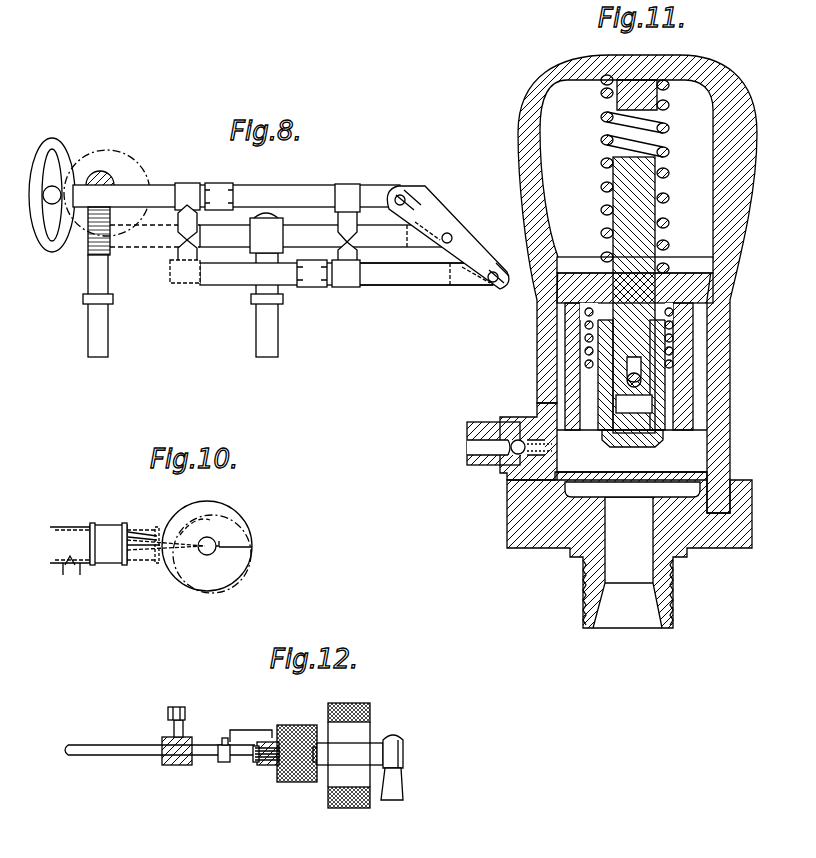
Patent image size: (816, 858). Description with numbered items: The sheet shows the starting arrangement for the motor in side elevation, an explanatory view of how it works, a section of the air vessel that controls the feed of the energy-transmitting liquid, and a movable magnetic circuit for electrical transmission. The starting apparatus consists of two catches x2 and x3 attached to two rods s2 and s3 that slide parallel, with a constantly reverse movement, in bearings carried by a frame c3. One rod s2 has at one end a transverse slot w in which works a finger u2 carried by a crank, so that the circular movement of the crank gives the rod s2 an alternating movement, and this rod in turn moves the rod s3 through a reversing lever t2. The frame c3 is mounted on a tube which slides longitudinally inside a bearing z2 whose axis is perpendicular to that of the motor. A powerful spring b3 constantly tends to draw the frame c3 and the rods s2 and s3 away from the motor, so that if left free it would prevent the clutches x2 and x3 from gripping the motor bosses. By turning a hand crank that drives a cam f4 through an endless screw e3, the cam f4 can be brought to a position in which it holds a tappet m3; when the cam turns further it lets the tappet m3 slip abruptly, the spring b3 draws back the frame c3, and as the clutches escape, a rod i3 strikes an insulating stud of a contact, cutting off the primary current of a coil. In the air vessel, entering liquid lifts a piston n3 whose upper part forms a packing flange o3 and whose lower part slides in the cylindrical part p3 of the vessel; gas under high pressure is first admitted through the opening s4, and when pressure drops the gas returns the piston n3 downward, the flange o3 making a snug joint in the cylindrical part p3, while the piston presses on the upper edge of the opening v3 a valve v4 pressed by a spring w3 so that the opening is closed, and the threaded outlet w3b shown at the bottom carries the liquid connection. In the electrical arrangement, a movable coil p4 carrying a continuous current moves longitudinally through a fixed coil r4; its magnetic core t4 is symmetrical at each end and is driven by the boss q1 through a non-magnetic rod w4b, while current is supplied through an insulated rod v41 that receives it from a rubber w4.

In FIG. 8, the transverse slot w is at (52, 165).
In FIG. 8, the finger u2 is at (46, 207).
In FIG. 8, the endless screw e3 is at (104, 185).
In FIG. 8, the rod i3 is at (184, 233).
In FIG. 8, the frame c3 is at (183, 256).
In FIG. 8, the catch x2 is at (219, 190).
In FIG. 8, the bearing z2 is at (266, 218).
In FIG. 8, the rod s2 is at (292, 193).
In FIG. 8, the catch x3 is at (312, 286).
In FIG. 8, the rod s3 is at (402, 286).
In FIG. 8, the reversing lever t2 is at (430, 219).
In FIG. 10, the spring b3 is at (108, 565).
In FIG. 10, the tappet m3 is at (135, 538).
In FIG. 10, the cam f4 is at (238, 517).
In FIG. 12, the rubber w4 is at (165, 741).
In FIG. 12, the insulated rod v41 is at (202, 753).
In FIG. 12, the magnetic core t4 is at (272, 766).
In FIG. 12, the movable coil p4 is at (292, 783).
In FIG. 12, the shaft w4b is at (383, 743).
In FIG. 12, the fixed coil r4 is at (360, 706).
In FIG. 12, the boss q1 is at (392, 752).
In FIG. 11, the cylindrical part p3 is at (745, 208).
In FIG. 11, the opening s4 is at (474, 445).
In FIG. 11, the opening v3 is at (647, 510).
In FIG. 11, the outlet w3b is at (613, 625).
In FIG. 11, the piston n3 is at (715, 287).
In FIG. 11, the spring w3 is at (592, 333).
In FIG. 11, the packing flange o3 is at (558, 270).
In FIG. 11, the valve v4 is at (645, 447).